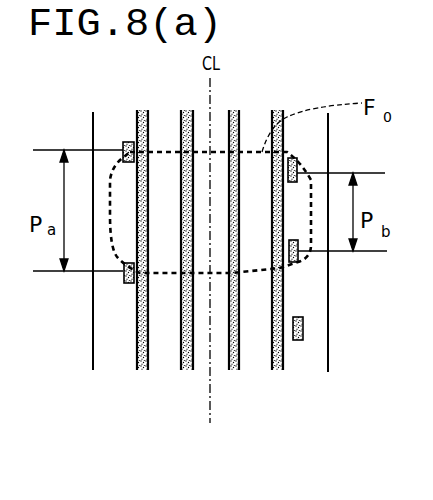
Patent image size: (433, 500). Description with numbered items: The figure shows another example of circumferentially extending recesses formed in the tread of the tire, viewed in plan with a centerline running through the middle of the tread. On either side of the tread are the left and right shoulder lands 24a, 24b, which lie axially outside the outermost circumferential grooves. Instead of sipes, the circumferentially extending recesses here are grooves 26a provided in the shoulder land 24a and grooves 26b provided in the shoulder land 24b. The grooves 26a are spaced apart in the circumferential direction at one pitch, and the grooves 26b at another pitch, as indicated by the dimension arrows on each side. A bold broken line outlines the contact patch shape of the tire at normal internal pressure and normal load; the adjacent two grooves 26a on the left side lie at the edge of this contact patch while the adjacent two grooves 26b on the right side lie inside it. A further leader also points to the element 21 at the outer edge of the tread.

The substrate 21 is at (318, 318).
The left shoulder land 24a is at (113, 328).
The right shoulder land 24b is at (303, 348).
The grooves 26a is at (125, 147).
The grooves 26b is at (298, 162).